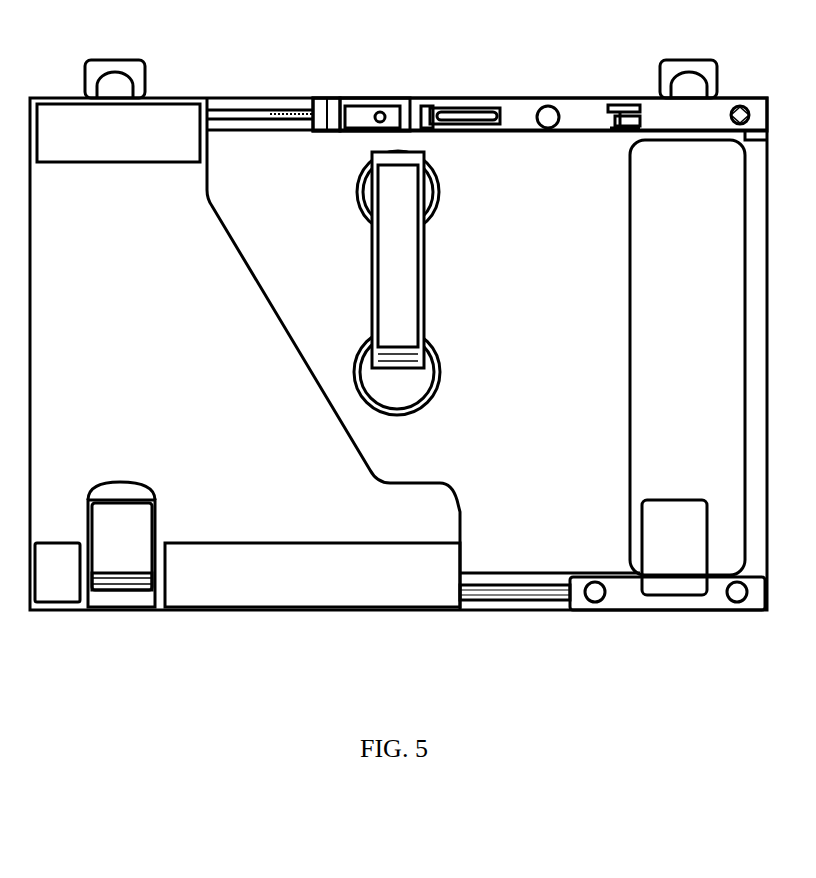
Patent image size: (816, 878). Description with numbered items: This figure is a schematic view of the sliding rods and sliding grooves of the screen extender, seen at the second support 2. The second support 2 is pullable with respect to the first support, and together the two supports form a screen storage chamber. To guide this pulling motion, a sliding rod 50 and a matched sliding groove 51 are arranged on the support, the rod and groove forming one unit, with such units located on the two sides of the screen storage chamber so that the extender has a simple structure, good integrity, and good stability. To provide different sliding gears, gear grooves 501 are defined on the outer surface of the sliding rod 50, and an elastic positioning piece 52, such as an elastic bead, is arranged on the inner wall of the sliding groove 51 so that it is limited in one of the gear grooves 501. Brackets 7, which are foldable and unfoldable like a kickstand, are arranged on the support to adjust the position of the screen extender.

The second support 2 is at (572, 100).
The bracket 7 is at (112, 68).
The sliding rod 50 is at (287, 110).
The gear groove 501 is at (313, 100).
The elastic positioning piece 52 is at (378, 112).
The sliding groove 51 is at (508, 116).